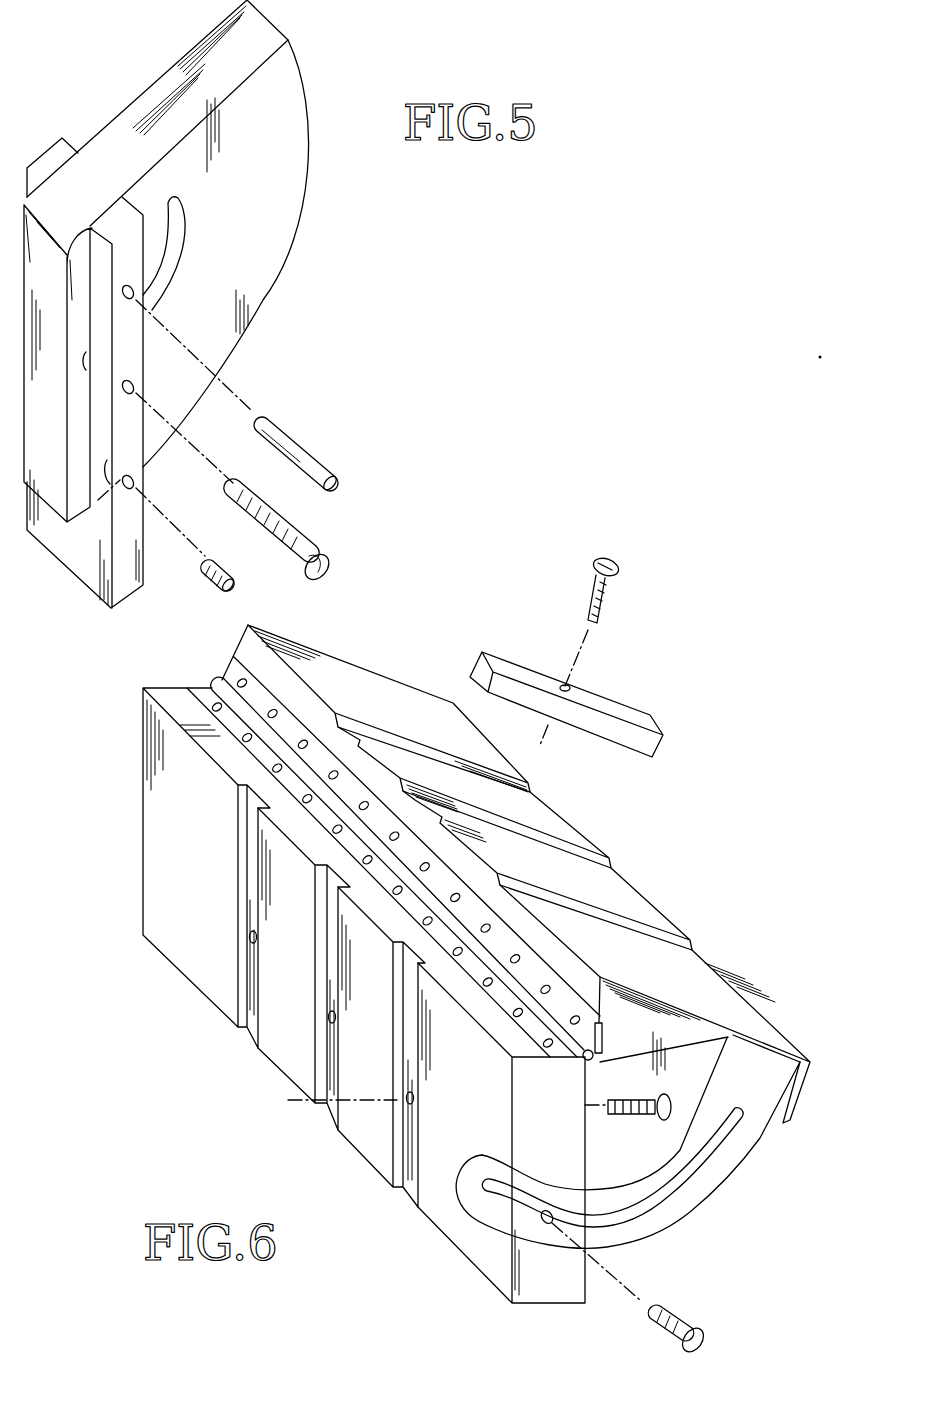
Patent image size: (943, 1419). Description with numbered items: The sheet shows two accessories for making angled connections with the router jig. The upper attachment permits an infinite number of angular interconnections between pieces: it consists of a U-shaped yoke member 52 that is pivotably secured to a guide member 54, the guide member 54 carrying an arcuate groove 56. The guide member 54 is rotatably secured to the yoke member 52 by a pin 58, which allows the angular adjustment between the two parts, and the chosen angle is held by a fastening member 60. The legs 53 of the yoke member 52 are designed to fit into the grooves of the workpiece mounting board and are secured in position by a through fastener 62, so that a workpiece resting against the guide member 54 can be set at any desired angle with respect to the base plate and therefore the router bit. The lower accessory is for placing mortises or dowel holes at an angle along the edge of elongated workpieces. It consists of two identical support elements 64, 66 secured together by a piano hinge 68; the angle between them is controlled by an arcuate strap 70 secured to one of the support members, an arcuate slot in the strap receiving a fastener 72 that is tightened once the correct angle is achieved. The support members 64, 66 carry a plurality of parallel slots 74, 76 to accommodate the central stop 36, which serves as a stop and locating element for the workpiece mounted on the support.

In FIG. 6, the center stop 36 is at (661, 690).
In FIG. 5, the U-shaped yoke member 52 is at (82, 572).
In FIG. 5, the legs 53 is at (50, 155).
In FIG. 5, the guide member 54 is at (293, 147).
In FIG. 5, the arcuate groove 56 is at (181, 228).
In FIG. 5, the pin 58 is at (325, 465).
In FIG. 5, the fastening member 60 is at (212, 584).
In FIG. 5, the through fastener 62 is at (313, 547).
In FIG. 6, the support element 64 is at (140, 797).
In FIG. 6, the support element 66 is at (750, 1013).
In FIG. 6, the piano hinge 68 is at (213, 703).
In FIG. 6, the arcuate strap 70 is at (755, 1157).
In FIG. 6, the fastener 72 is at (680, 1318).
In FIG. 6, the parallel slots 74 is at (250, 1035).
In FIG. 6, the parallel slots 76 is at (553, 800).